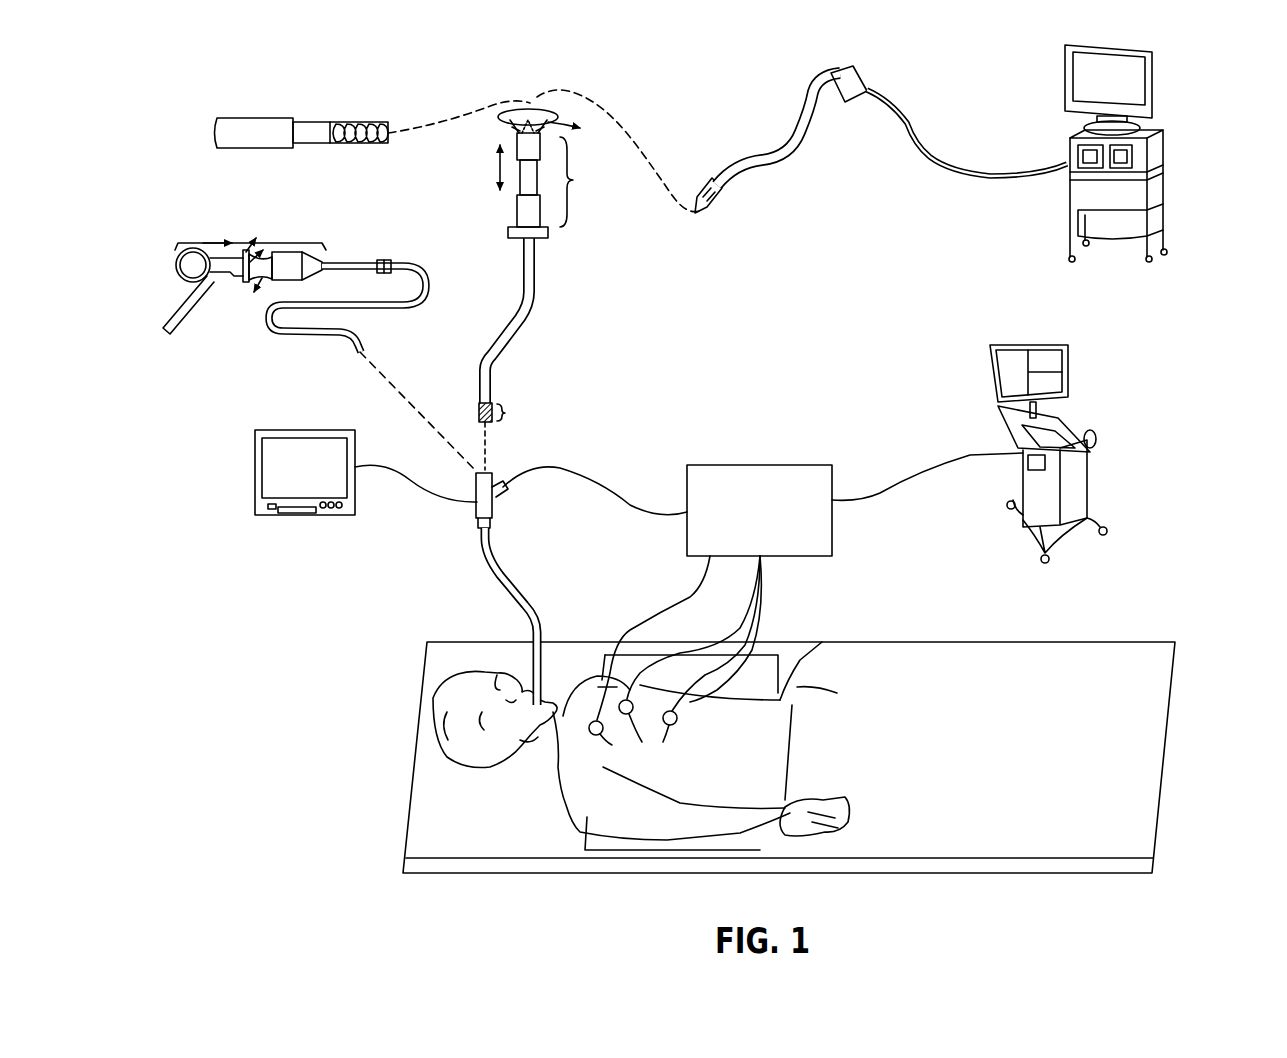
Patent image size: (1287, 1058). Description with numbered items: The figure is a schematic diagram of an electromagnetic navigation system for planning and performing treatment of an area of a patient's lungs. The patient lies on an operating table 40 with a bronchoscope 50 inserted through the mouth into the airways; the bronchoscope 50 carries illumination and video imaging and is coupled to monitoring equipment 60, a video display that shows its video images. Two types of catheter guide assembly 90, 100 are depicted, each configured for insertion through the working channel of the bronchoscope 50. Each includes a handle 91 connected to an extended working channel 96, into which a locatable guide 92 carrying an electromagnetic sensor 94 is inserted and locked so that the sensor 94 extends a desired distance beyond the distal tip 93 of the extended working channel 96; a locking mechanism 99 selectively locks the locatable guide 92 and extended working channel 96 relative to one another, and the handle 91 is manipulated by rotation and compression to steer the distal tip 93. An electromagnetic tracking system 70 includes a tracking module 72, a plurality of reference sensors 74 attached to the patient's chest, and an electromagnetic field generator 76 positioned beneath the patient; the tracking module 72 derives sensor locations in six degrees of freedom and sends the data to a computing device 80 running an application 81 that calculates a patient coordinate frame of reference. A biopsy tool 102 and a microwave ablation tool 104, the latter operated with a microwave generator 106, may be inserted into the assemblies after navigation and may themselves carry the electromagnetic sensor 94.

The operating table 40 is at (412, 800).
The bronchoscope 50 is at (488, 572).
The monitoring equipment 60 is at (270, 516).
The electromagnetic tracking system 70 is at (812, 424).
The tracking module 72 is at (773, 526).
The reference sensors 74 is at (660, 742).
The electromagnetic field generator 76 is at (602, 845).
The computing device 80 is at (1090, 470).
The application 81 is at (1068, 375).
The catheter guide assembly 90 is at (178, 206).
The handle 91 is at (389, 214).
The locatable guide 92 is at (365, 262).
The distal tip 93 is at (360, 355).
The electromagnetic sensor 94 is at (365, 345).
The extended working channel 96 is at (430, 292).
The locking mechanism 99 is at (388, 260).
The catheter guide assembly 100 is at (553, 278).
The biopsy tool 102 is at (310, 122).
The microwave ablation tool 104 is at (787, 165).
The microwave generator 106 is at (1150, 157).